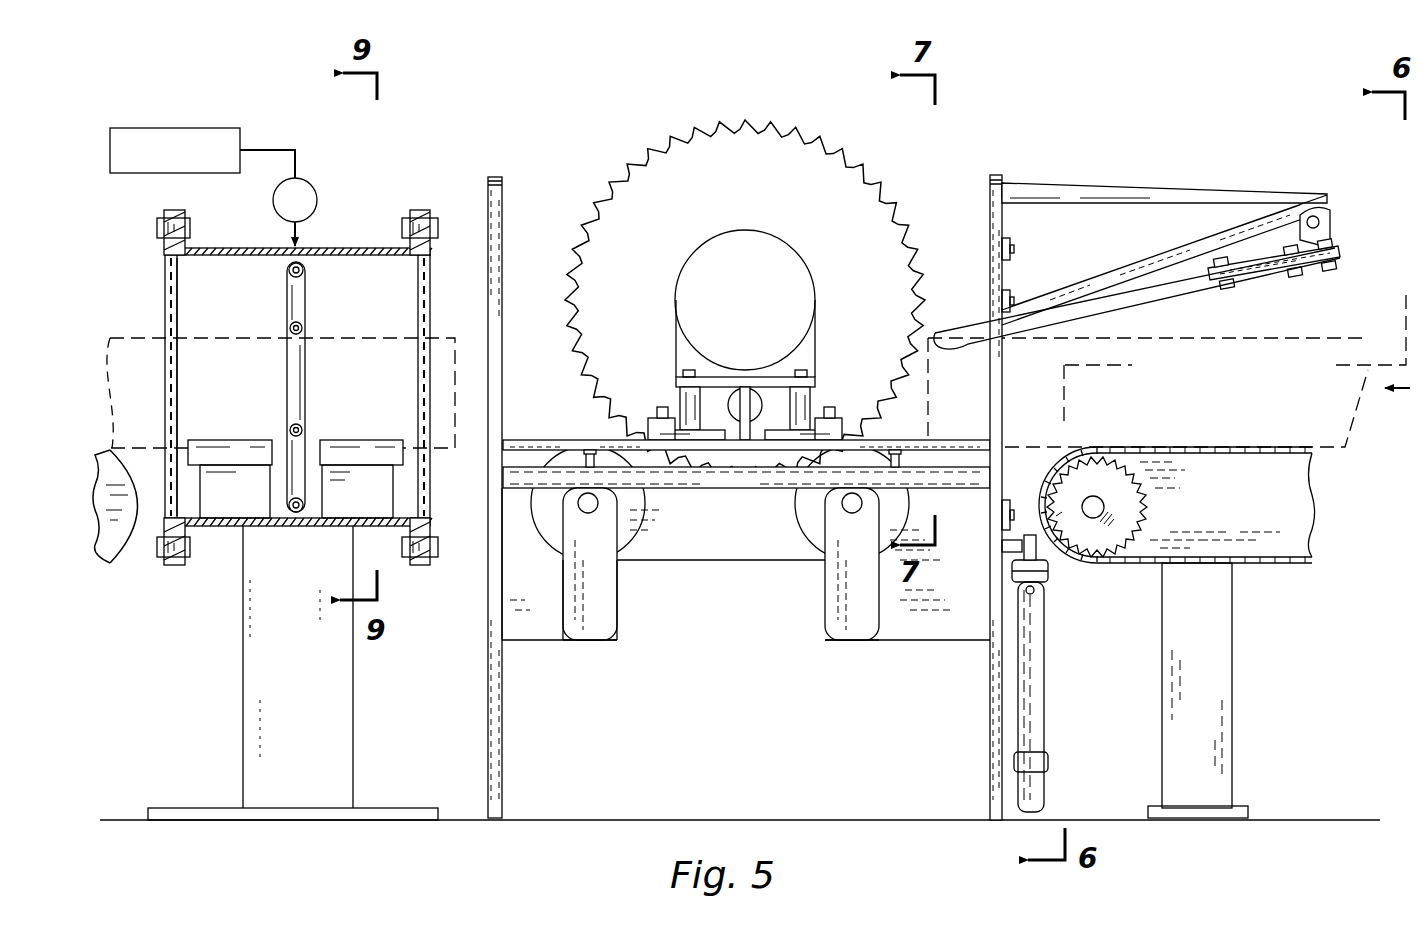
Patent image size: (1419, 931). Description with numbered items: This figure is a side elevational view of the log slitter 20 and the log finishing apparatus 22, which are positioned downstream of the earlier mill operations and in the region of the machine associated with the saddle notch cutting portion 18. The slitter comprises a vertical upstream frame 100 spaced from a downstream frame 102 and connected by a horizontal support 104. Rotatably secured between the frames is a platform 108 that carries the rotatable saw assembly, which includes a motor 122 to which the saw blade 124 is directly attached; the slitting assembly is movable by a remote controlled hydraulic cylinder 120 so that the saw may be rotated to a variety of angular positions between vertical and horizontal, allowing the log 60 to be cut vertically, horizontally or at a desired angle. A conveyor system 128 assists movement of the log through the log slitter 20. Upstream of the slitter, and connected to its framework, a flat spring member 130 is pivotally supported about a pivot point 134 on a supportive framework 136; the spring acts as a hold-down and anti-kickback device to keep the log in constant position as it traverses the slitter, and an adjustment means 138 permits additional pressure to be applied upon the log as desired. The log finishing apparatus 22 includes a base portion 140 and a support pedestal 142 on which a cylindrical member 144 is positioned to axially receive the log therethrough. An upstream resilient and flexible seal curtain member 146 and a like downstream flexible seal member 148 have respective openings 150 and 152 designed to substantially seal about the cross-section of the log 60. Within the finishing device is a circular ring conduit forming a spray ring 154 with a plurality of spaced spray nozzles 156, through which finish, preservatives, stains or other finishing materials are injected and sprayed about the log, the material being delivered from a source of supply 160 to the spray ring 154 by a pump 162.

The saddle notch cutting portion 18 is at (1182, 150).
The log slitter 20 is at (605, 115).
The log finishing apparatus 22 is at (315, 122).
The log 60 is at (140, 345).
The vertical upstream frame 100 is at (990, 718).
The downstream frame 102 is at (503, 732).
The horizontal support 104 is at (757, 488).
The platform 108 is at (963, 440).
The remote controlled hydraulic cylinder 120 is at (1033, 728).
The motor 122 is at (760, 278).
The saw blade 124 is at (825, 188).
The conveyor system 128 is at (710, 562).
The flat spring member 130 is at (1165, 288).
The pivot point 134 is at (1321, 222).
The supportive framework 136 is at (1125, 203).
The adjustment means 138 is at (1167, 232).
The base portion 140 is at (418, 808).
The support pedestal 142 is at (344, 722).
The cylindrical member 144 is at (360, 248).
The upstream resilient and flexible seal curtain member 146 is at (423, 292).
The downstream flexible seal member 148 is at (179, 292).
The opening 150 is at (316, 384).
The opening 152 is at (183, 355).
The spray ring 154 is at (306, 296).
The spray nozzles 156 is at (303, 327).
The source of supply 160 is at (202, 153).
The pump 162 is at (318, 188).